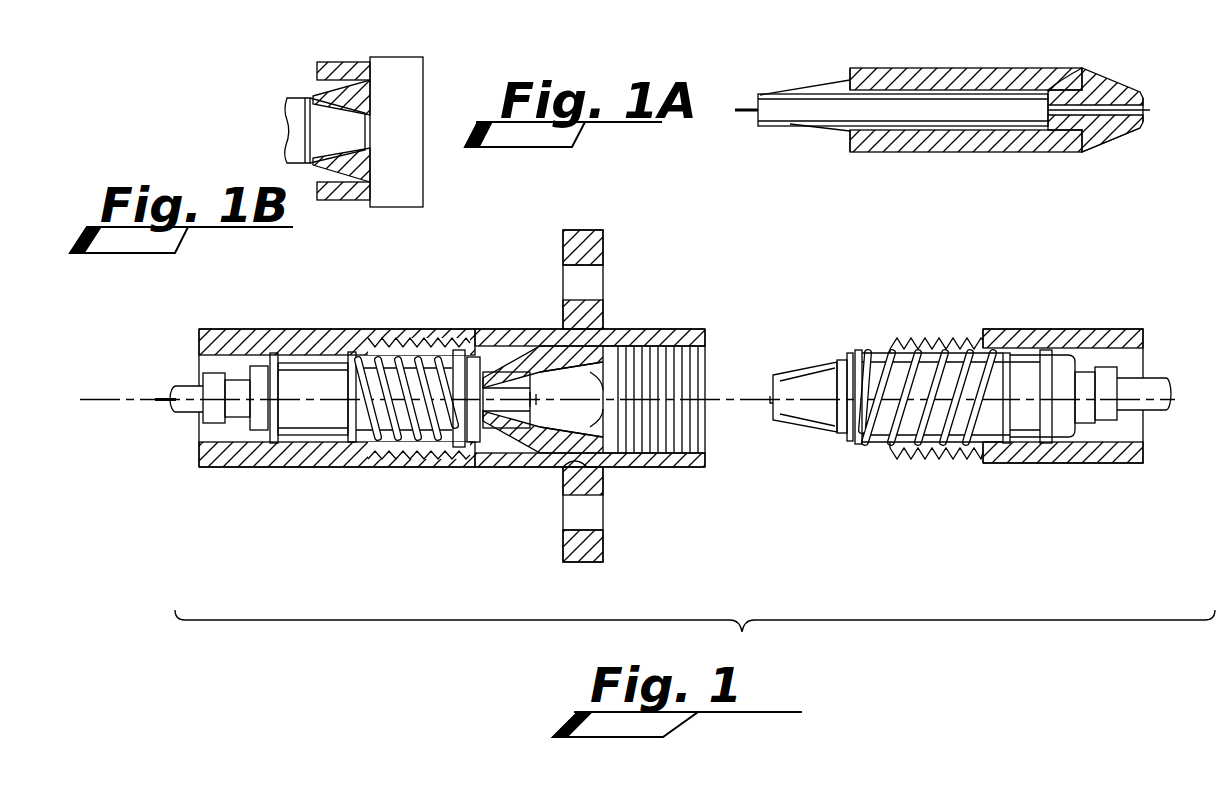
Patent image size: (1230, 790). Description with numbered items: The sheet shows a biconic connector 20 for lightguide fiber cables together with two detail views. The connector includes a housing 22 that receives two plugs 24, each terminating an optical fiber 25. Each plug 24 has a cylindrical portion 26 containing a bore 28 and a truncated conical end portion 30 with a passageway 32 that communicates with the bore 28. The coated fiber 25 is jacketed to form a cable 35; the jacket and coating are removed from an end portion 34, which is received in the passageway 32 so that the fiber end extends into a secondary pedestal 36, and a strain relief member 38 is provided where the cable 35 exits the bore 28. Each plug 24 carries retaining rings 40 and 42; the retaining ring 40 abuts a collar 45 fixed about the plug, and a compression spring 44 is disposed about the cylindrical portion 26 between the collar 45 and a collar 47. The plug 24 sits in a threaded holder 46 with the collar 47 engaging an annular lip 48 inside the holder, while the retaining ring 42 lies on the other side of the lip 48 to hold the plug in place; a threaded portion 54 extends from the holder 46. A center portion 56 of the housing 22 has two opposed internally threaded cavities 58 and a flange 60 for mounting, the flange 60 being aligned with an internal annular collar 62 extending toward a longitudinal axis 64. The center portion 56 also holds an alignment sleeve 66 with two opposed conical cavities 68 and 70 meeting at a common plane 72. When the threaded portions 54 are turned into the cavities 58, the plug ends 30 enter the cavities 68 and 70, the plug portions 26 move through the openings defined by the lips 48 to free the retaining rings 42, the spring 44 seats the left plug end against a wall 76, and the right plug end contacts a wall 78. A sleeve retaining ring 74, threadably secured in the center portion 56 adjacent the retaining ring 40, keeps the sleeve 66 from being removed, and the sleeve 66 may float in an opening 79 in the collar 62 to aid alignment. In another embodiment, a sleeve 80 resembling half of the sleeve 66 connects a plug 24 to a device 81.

In FIG. 1, the biconic connector 20 is at (695, 636).
In FIG. 1, the housing 22 is at (398, 472).
In FIG. 1, the plug 24 is at (808, 444).
In FIG. 1A, the plug 24 is at (910, 154).
In FIG. 1B, the plug 24 is at (291, 95).
In FIG. 1, the optical fiber 25 is at (166, 405).
In FIG. 1A, the optical fiber 25 is at (745, 113).
In FIG. 1, the cylindrical portion 26 is at (360, 412).
In FIG. 1A, the cylindrical portion 26 is at (897, 68).
In FIG. 1A, the bore 28 is at (1087, 80).
In FIG. 1A, the end portion 30 is at (1100, 150).
In FIG. 1A, the passageway 32 is at (1118, 123).
In FIG. 1A, the end portion 34 is at (1074, 112).
In FIG. 1, the cable 35 is at (186, 386).
In FIG. 1, the secondary pedestal 36 is at (775, 395).
In FIG. 1A, the secondary pedestal 36 is at (1143, 104).
In FIG. 1A, the strain relief member 38 is at (822, 85).
In FIG. 1, the retaining ring 40 is at (850, 446).
In FIG. 1, the retaining ring 42 is at (268, 441).
In FIG. 1, the compression spring 44 is at (886, 447).
In FIG. 1, the collar 45 is at (858, 350).
In FIG. 1, the threaded holder 46 is at (1080, 330).
In FIG. 1, the collar 47 is at (1005, 446).
In FIG. 1, the annular lip 48 is at (1028, 441).
In FIG. 1, the threaded portion 54 is at (921, 338).
In FIG. 1, the center portion 56 is at (674, 328).
In FIG. 1, the internally threaded cavity 58 is at (674, 447).
In FIG. 1, the flange 60 is at (565, 233).
In FIG. 1, the annular collar 62 is at (588, 452).
In FIG. 1, the longitudinal axis 64 is at (104, 397).
In FIG. 1, the alignment sleeve 66 is at (514, 444).
In FIG. 1, the conically shaped cavity 68 is at (590, 390).
In FIG. 1, the conically shaped cavity 70 is at (546, 406).
In FIG. 1, the common plane 72 is at (548, 386).
In FIG. 1, the sleeve retaining ring 74 is at (462, 352).
In FIG. 1, the wall 76 is at (490, 366).
In FIG. 1, the wall 78 is at (602, 347).
In FIG. 1, the opening 79 is at (565, 468).
In FIG. 1B, the sleeve 80 is at (354, 172).
In FIG. 1B, the device 81 is at (420, 190).